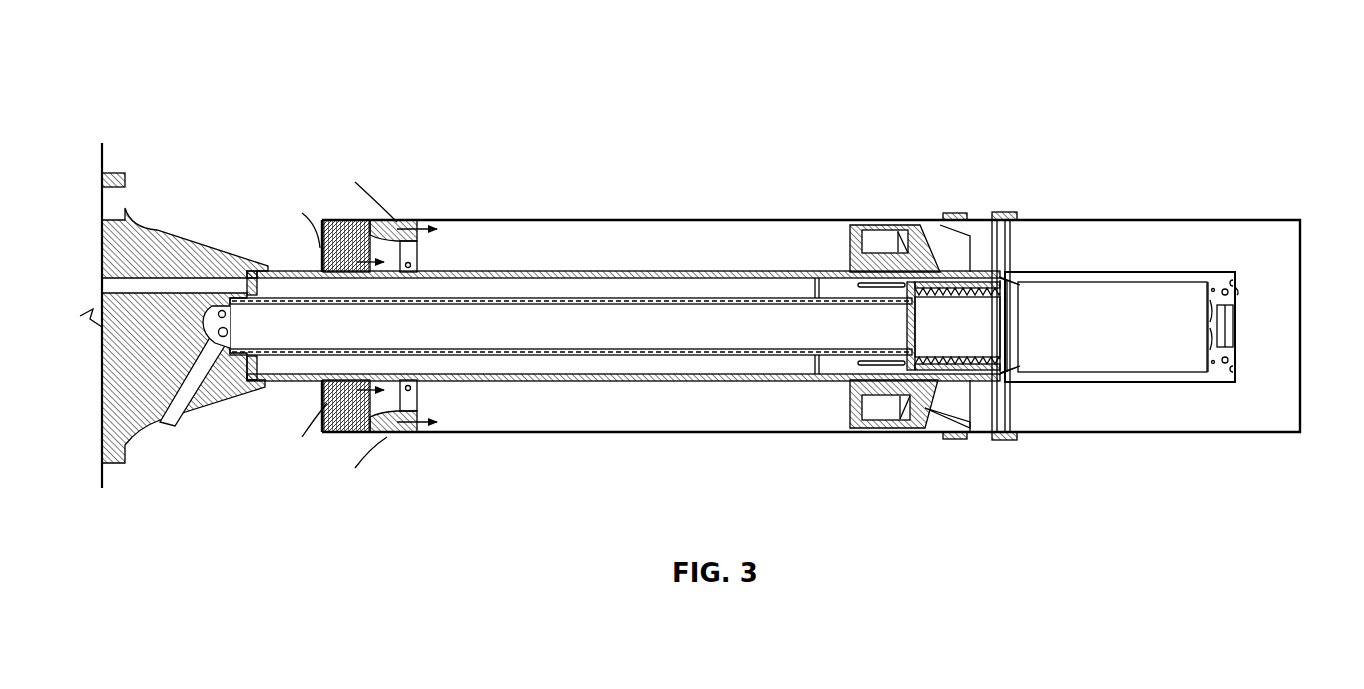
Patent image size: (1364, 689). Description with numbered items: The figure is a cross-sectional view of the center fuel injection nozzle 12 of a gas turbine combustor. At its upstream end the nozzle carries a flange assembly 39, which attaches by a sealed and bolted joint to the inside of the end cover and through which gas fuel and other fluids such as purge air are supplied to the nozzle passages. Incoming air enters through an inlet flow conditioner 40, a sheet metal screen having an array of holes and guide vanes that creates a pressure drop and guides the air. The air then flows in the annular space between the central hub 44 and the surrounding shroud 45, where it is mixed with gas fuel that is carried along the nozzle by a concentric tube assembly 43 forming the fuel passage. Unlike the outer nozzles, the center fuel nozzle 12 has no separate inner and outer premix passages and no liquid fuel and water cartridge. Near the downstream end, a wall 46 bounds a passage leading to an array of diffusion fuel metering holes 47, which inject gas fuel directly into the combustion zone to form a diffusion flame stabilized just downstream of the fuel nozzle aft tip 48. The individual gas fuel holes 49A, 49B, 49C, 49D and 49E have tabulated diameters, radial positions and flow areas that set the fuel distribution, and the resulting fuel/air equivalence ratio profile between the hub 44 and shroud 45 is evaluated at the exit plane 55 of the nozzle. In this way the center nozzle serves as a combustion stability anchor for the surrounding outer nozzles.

The center fuel injection nozzle 12 is at (176, 72).
The flange assembly 39 is at (122, 442).
The inlet flow conditioner 40 is at (353, 438).
The concentric tube assembly 43 is at (483, 308).
The hub 44 is at (1070, 271).
The shroud 45 is at (1125, 433).
The wall 46 is at (1127, 370).
The diffusion fuel metering holes 47 is at (1210, 327).
The fuel nozzle aft tip 48 is at (1227, 271).
The hole A 49A is at (963, 428).
The hole B 49B is at (893, 421).
The hole C 49C is at (880, 421).
The hole D 49D is at (888, 258).
The hole E 49E is at (872, 237).
The exit plane 55 is at (1237, 290).